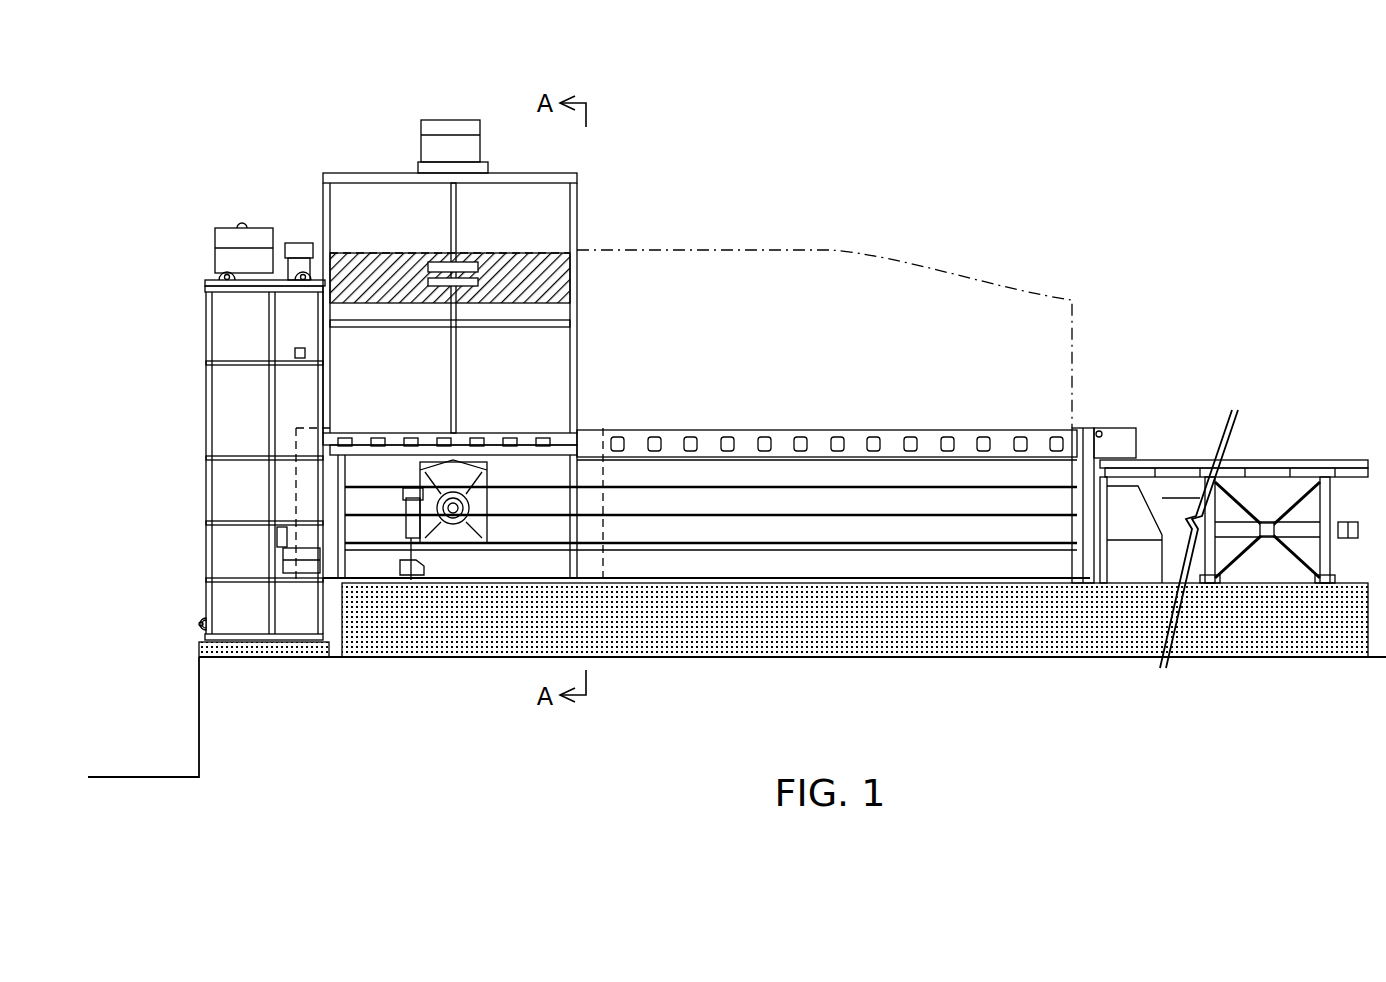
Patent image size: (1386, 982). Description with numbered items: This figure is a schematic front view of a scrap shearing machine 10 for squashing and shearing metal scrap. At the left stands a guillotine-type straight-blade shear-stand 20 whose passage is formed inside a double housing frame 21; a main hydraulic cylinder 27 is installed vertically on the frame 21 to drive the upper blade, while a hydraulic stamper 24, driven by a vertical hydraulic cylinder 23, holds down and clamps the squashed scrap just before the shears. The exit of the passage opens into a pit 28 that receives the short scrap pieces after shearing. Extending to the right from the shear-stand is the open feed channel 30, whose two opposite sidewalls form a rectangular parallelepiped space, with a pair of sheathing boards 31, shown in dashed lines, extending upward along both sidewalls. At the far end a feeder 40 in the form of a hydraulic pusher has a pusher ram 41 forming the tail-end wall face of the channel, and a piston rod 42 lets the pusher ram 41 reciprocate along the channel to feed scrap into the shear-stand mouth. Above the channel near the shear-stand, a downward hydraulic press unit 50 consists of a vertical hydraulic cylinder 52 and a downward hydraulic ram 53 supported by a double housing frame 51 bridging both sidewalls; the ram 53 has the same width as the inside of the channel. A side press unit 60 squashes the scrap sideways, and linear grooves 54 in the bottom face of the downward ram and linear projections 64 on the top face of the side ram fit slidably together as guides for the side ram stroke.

The scrap shearing machine 10 is at (1133, 296).
The straight-blade shear-stand 20 is at (306, 612).
The double housing frame 21 is at (237, 428).
The vertical hydraulic cylinder 23 is at (297, 243).
The hydraulic stamper 24 is at (285, 562).
The main hydraulic cylinder 27 is at (242, 224).
The pit 28 is at (143, 717).
The feed channel 30 is at (820, 430).
The sheathing boards 31 is at (1010, 318).
The feeder 40 is at (1090, 583).
The pusher ram 41 is at (1085, 428).
The piston rod 42 is at (1233, 533).
The downward hydraulic press unit 50 is at (540, 183).
The double housing frame 51 is at (520, 216).
The vertical hydraulic cylinder 52 is at (465, 140).
The downward hydraulic ram 53 is at (575, 283).
The linear grooves 54 is at (485, 303).
The side press unit 60 is at (455, 512).
The linear projections 64 is at (485, 443).